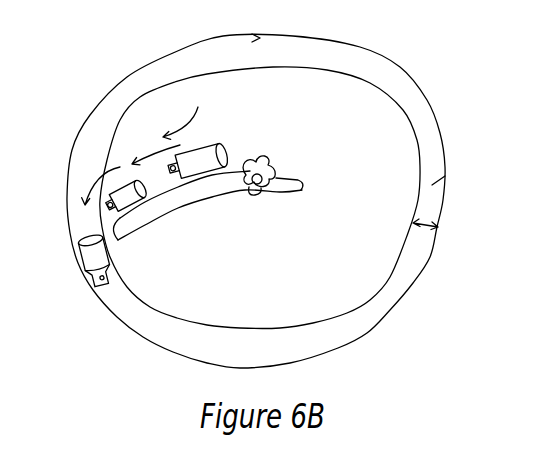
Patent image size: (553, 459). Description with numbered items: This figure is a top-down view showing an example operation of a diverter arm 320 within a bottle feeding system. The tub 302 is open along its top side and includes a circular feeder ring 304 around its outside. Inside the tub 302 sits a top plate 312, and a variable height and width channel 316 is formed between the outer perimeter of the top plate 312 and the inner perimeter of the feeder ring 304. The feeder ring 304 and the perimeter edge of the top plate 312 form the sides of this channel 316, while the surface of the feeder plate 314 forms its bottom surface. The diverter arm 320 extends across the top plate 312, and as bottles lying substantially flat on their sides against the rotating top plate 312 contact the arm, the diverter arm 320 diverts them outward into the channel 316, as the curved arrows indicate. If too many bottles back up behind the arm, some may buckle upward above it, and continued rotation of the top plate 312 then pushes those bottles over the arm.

The tub 302 is at (433, 93).
The circular feeder ring 304 is at (402, 68).
The top plate 312 is at (410, 156).
The feeder plate 314 is at (445, 176).
The channel 316 is at (428, 225).
The diverter arm 320 is at (202, 192).